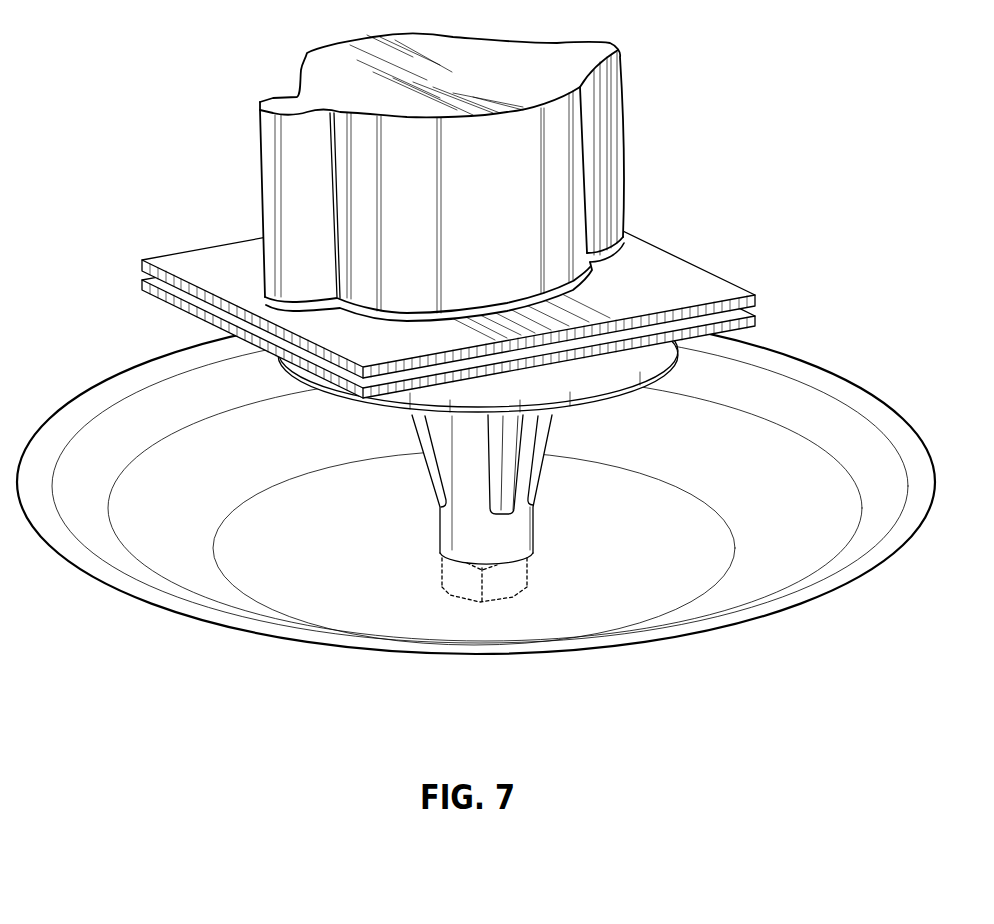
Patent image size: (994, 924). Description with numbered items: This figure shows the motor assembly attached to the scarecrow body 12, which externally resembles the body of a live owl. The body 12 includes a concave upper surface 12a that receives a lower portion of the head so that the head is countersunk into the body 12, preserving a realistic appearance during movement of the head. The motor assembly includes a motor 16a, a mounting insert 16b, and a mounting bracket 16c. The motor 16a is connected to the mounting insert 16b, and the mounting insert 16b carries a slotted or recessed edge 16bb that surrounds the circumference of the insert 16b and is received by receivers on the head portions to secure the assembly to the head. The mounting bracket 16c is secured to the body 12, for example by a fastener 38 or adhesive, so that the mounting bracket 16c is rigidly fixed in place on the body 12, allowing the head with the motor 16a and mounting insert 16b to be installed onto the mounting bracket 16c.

The scarecrow body 12 is at (125, 402).
The concave upper surface 12a is at (152, 535).
The motor 16a is at (672, 141).
The mounting insert 16b is at (726, 257).
The recessed edge 16bb is at (143, 300).
The mounting bracket 16c is at (572, 446).
The fastener 38 is at (450, 593).